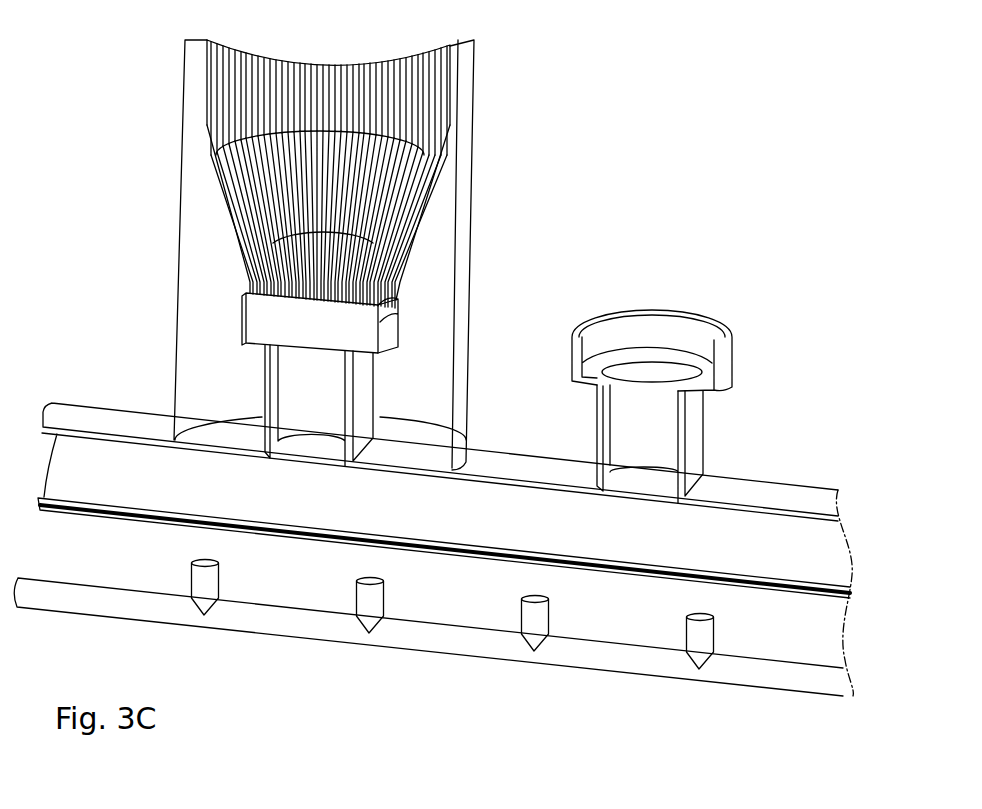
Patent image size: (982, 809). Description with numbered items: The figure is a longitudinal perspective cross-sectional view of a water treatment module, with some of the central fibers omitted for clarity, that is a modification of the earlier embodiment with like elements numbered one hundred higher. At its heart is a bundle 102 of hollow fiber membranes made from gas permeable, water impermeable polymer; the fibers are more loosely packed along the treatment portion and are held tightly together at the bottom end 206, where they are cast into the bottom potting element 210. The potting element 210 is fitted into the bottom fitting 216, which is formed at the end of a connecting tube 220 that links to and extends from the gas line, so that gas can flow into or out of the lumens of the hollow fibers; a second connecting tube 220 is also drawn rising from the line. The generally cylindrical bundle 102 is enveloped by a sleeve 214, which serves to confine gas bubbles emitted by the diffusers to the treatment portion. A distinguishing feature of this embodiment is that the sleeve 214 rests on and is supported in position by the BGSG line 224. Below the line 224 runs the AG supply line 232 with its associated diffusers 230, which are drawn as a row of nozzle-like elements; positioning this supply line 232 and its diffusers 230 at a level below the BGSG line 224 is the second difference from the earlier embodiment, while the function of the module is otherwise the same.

The bundle of hollow fiber membranes 102 is at (207, 92).
The bottom end of the bundle 206 is at (232, 210).
The bottom potting element 210 is at (283, 325).
The sleeve 214 is at (474, 187).
The bottom fitting 216 is at (394, 328).
The connecting tube 220 is at (362, 390).
The BGSG line 224 is at (108, 508).
The diffusers 230 is at (203, 580).
The AG supply line 232 is at (264, 620).